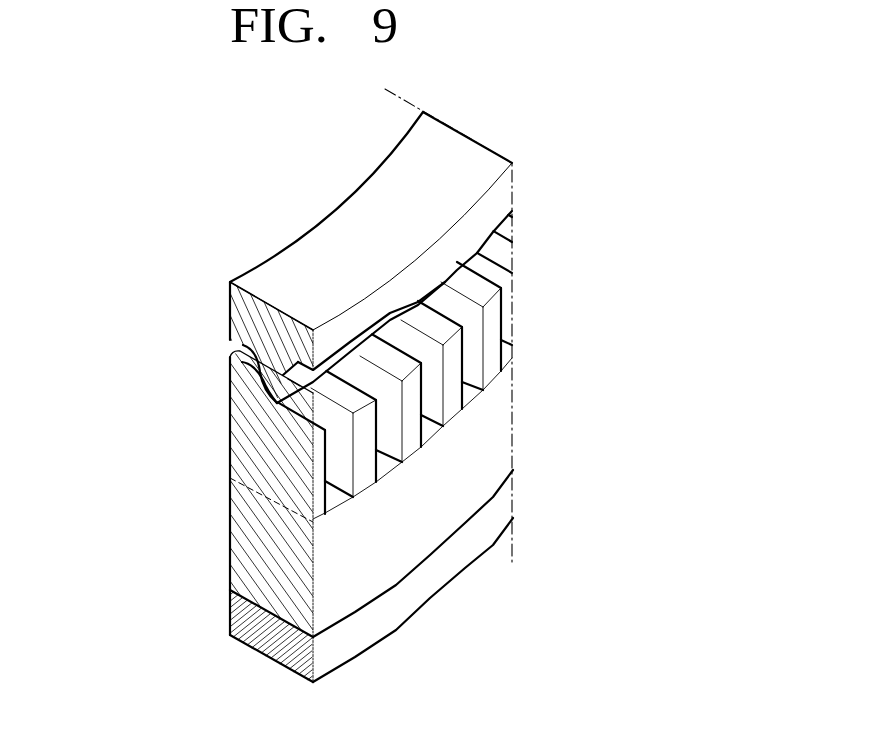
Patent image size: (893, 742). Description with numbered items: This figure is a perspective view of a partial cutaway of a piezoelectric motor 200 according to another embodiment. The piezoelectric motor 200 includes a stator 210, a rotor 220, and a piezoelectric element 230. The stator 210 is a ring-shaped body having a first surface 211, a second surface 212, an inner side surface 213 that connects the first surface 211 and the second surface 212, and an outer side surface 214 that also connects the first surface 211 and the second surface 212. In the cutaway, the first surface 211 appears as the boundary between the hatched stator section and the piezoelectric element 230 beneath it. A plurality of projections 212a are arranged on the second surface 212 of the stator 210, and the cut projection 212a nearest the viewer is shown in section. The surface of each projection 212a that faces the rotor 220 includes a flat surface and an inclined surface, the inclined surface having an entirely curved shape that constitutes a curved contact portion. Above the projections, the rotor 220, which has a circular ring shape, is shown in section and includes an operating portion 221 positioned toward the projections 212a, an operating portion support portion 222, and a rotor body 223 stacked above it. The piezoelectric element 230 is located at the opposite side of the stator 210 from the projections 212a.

The piezoelectric motor 200 is at (632, 121).
The stator 210 is at (354, 448).
The first surface 211 is at (248, 602).
The second surface 212 is at (430, 423).
The projection 212a is at (172, 420).
The inner side surface 213 is at (245, 524).
The outer side surface 214 is at (412, 545).
The rotor 220 is at (282, 257).
The operating portion 221 is at (243, 345).
The operating portion support portion 222 is at (245, 328).
The rotor body 223 is at (245, 299).
The piezoelectric element 230 is at (243, 623).